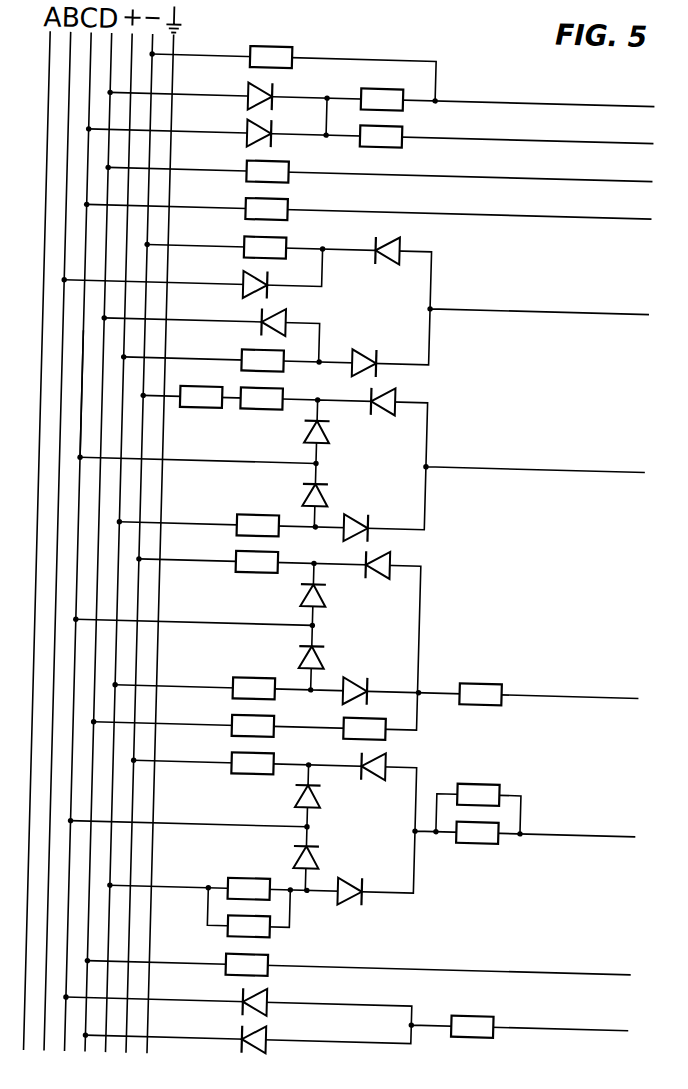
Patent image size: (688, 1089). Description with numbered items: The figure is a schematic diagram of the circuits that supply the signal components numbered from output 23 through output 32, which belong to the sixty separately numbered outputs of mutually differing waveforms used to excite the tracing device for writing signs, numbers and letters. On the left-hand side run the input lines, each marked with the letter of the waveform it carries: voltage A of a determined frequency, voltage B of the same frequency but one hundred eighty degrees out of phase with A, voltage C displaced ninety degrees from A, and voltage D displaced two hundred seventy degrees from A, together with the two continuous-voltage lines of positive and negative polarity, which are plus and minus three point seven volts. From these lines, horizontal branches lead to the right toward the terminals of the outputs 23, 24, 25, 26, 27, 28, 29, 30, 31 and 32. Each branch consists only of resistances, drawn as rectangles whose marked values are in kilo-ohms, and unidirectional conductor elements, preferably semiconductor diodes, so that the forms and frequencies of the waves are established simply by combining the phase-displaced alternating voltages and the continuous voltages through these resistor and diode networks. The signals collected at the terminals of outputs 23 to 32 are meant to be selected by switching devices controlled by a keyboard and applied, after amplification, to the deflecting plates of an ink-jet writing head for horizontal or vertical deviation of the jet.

The signal component output 23 is at (382, 81).
The signal component output 24 is at (372, 124).
The signal component output 25 is at (380, 166).
The signal component output 26 is at (369, 204).
The signal component output 27 is at (356, 306).
The signal component output 28 is at (363, 439).
The signal component output 29 is at (357, 645).
The signal component output 30 is at (352, 846).
The signal component output 31 is at (359, 959).
The signal component output 32 is at (347, 1023).